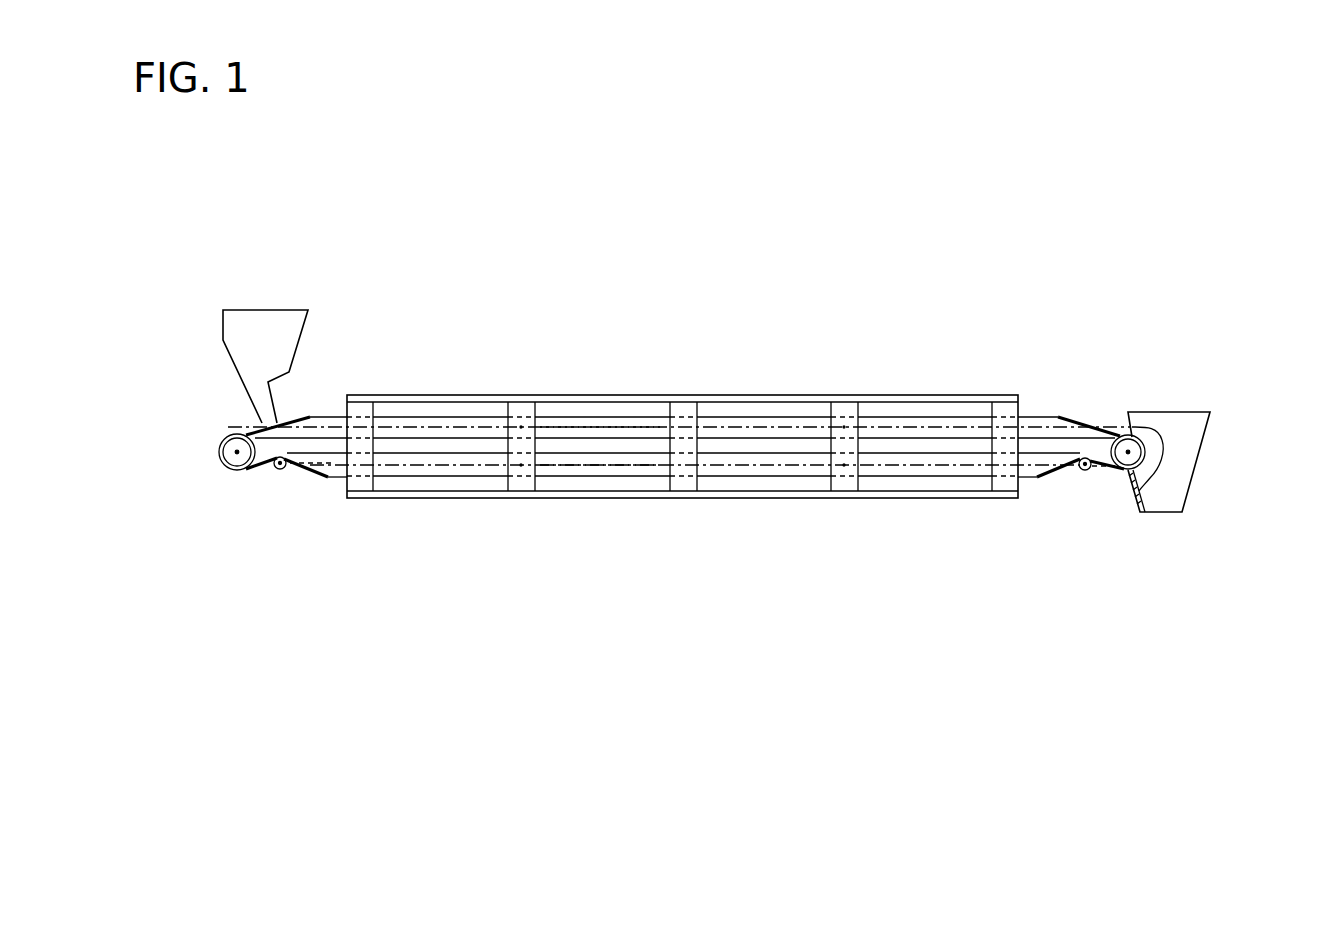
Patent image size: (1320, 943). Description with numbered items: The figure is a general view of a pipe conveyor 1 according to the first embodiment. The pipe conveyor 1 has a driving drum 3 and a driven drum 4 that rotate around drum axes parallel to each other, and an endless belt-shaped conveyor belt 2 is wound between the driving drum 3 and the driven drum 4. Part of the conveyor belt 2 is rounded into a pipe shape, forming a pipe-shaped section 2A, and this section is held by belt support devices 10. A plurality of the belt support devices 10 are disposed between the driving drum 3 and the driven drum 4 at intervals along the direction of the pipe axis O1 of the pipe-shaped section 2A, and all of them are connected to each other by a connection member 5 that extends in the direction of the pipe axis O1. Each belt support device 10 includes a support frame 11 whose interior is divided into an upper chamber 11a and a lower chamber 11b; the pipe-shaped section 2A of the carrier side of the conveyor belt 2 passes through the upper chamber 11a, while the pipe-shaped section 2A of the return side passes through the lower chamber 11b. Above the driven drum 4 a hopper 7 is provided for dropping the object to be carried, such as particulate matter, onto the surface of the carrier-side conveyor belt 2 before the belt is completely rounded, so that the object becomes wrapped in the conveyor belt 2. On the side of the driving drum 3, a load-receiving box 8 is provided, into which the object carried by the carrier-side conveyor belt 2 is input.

The pipe conveyor 1 is at (460, 168).
The conveyor belt 2 is at (1088, 417).
The pipe-shaped section 2A is at (937, 422).
The driving drum 3 is at (1138, 448).
The driven drum 4 is at (237, 462).
The connection member 5 is at (683, 398).
The hopper 7 is at (268, 309).
The load-receiving box 8 is at (1190, 487).
The belt support device 10 is at (378, 405).
The support frame 11 is at (524, 407).
The upper chamber 11a is at (509, 424).
The lower chamber 11b is at (505, 478).
The pipe axis O1 is at (628, 408).